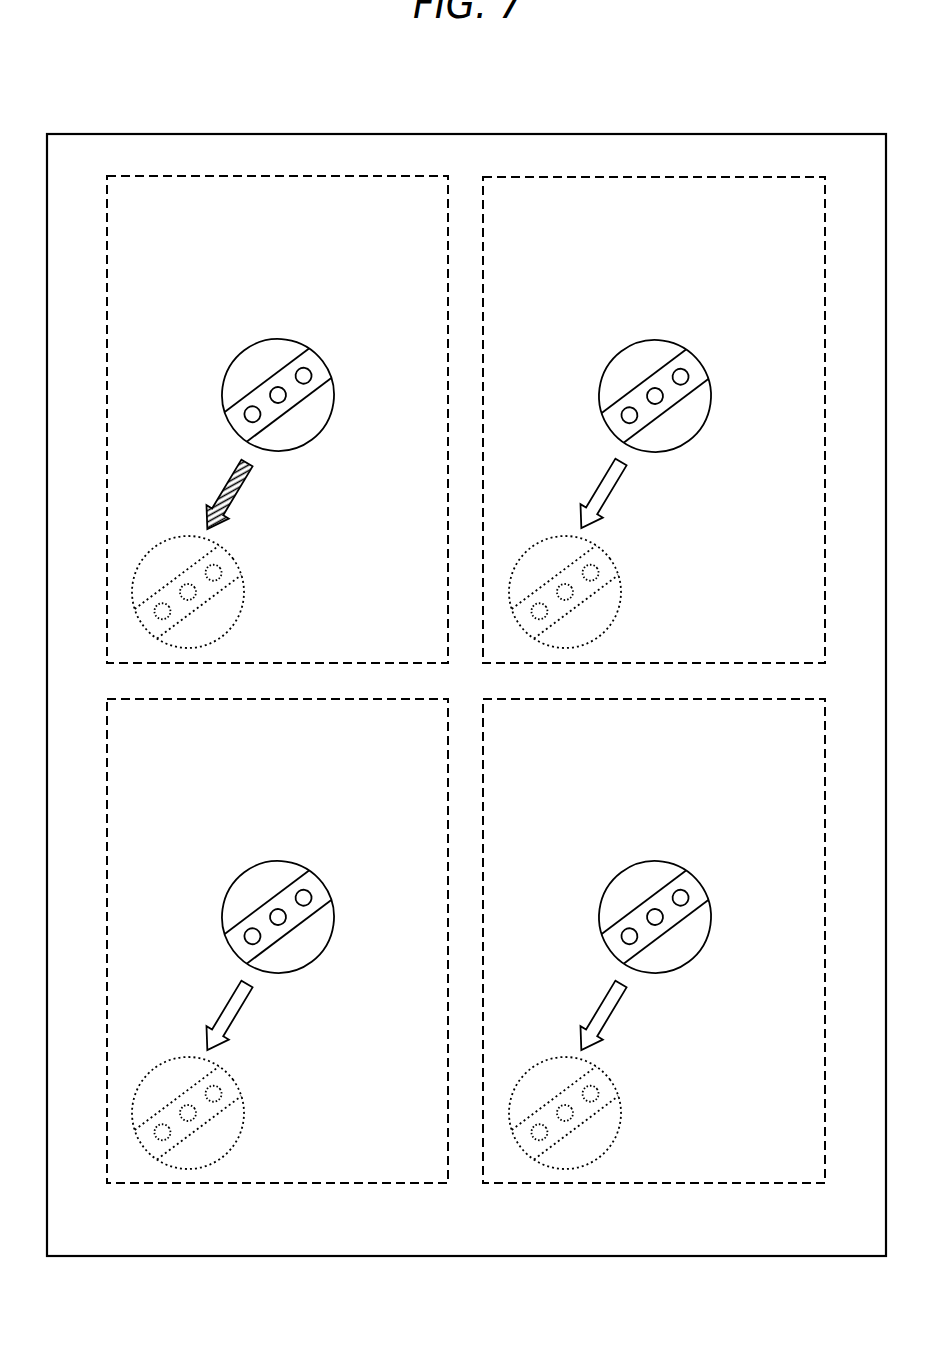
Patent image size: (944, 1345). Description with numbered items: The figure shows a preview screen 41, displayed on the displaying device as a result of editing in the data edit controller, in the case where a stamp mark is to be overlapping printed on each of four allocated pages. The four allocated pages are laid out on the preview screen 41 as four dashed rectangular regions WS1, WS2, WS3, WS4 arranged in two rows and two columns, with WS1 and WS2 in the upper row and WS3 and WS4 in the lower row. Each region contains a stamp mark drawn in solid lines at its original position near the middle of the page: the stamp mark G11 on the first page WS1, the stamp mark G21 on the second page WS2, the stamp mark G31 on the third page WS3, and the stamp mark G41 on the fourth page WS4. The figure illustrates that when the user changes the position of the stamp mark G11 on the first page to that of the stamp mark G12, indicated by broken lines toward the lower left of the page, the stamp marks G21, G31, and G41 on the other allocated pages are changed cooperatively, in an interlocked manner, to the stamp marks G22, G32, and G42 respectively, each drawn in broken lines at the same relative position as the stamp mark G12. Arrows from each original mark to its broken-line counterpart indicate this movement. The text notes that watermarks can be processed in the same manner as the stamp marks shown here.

The preview screen 41 is at (820, 134).
The first work space region WS1 is at (325, 176).
The second work space region WS2 is at (703, 177).
The third work space region WS3 is at (324, 1183).
The fourth work space region WS4 is at (702, 1183).
The stamp mark G11 is at (278, 339).
The stamp mark G12 is at (244, 592).
The stamp mark G21 is at (655, 340).
The stamp mark G22 is at (621, 592).
The stamp mark G31 is at (278, 861).
The stamp mark G32 is at (244, 1113).
The stamp mark G41 is at (655, 861).
The stamp mark G42 is at (621, 1113).